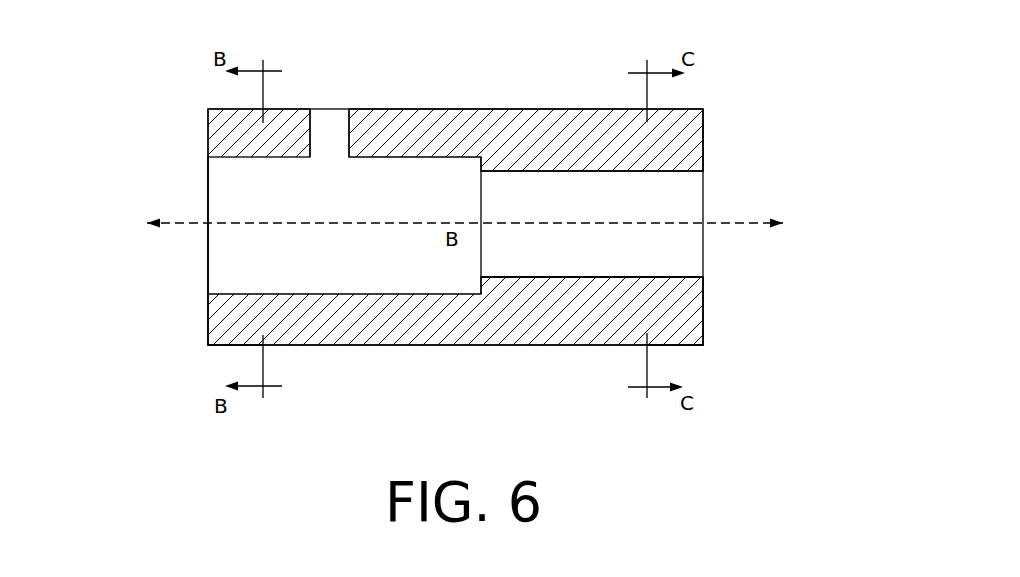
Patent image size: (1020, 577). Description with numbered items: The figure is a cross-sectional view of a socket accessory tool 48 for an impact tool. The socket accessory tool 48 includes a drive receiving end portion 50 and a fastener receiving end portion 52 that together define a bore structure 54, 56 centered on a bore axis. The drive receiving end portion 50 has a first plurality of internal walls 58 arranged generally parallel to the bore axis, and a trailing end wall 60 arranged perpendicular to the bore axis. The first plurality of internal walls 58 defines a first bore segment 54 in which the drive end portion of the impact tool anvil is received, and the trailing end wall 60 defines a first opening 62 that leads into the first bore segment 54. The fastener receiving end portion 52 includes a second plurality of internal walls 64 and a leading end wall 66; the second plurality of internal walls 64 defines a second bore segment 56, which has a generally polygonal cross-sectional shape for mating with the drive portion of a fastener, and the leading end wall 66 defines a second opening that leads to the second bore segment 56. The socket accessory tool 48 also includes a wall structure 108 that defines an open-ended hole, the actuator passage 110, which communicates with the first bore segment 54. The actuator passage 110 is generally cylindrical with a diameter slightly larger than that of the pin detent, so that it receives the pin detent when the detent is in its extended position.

The socket accessory tool 48 is at (165, 87).
The drive receiving end portion 50 is at (193, 356).
The fastener receiving end portion 52 is at (719, 315).
The first bore segment 54 is at (242, 293).
The second bore segment 56 is at (660, 277).
The first plurality of internal walls 58 is at (290, 294).
The trailing end wall 60 is at (208, 135).
The first opening 62 is at (205, 204).
The second plurality of internal walls 64 is at (512, 277).
The leading end wall 66 is at (703, 131).
The wall structure 108 is at (386, 122).
The actuator passage 110 is at (311, 133).